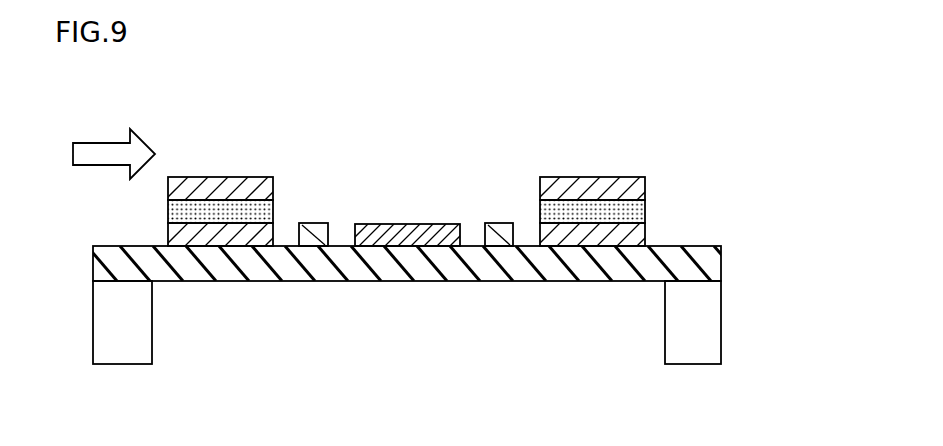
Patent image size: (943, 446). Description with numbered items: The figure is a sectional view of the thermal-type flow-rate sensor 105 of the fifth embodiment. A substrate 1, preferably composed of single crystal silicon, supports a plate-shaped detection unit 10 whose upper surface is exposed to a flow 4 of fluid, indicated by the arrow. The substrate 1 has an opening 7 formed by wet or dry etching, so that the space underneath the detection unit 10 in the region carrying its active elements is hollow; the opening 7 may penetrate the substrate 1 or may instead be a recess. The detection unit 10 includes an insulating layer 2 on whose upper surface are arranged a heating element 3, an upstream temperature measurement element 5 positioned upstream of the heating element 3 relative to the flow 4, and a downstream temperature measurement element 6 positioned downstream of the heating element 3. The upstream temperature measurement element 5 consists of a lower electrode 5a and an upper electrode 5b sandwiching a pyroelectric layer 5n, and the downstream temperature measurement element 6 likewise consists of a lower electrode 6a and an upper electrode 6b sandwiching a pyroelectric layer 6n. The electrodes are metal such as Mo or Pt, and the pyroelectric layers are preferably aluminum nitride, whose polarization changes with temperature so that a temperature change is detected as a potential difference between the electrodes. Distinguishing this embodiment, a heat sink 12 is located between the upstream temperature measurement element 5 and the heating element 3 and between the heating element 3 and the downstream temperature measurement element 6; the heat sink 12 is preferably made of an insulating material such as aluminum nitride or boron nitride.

The thermal-type flow-rate sensor 105 is at (191, 94).
The flow 4 is at (101, 142).
The insulating layer 2 is at (343, 262).
The substrate 1 is at (693, 350).
The opening 7 is at (251, 345).
The detection unit 10 is at (267, 101).
The upstream temperature measurement element 5 is at (228, 134).
The upper electrode 5b is at (250, 190).
The pyroelectric layer 5n is at (268, 212).
The lower electrode 5a is at (268, 236).
The heating element 3 is at (408, 224).
The heat sink 12 is at (492, 232).
The downstream temperature measurement element 6 is at (582, 134).
The lower electrode 6a is at (542, 236).
The pyroelectric layer 6n is at (542, 212).
The upper electrode 6b is at (560, 190).